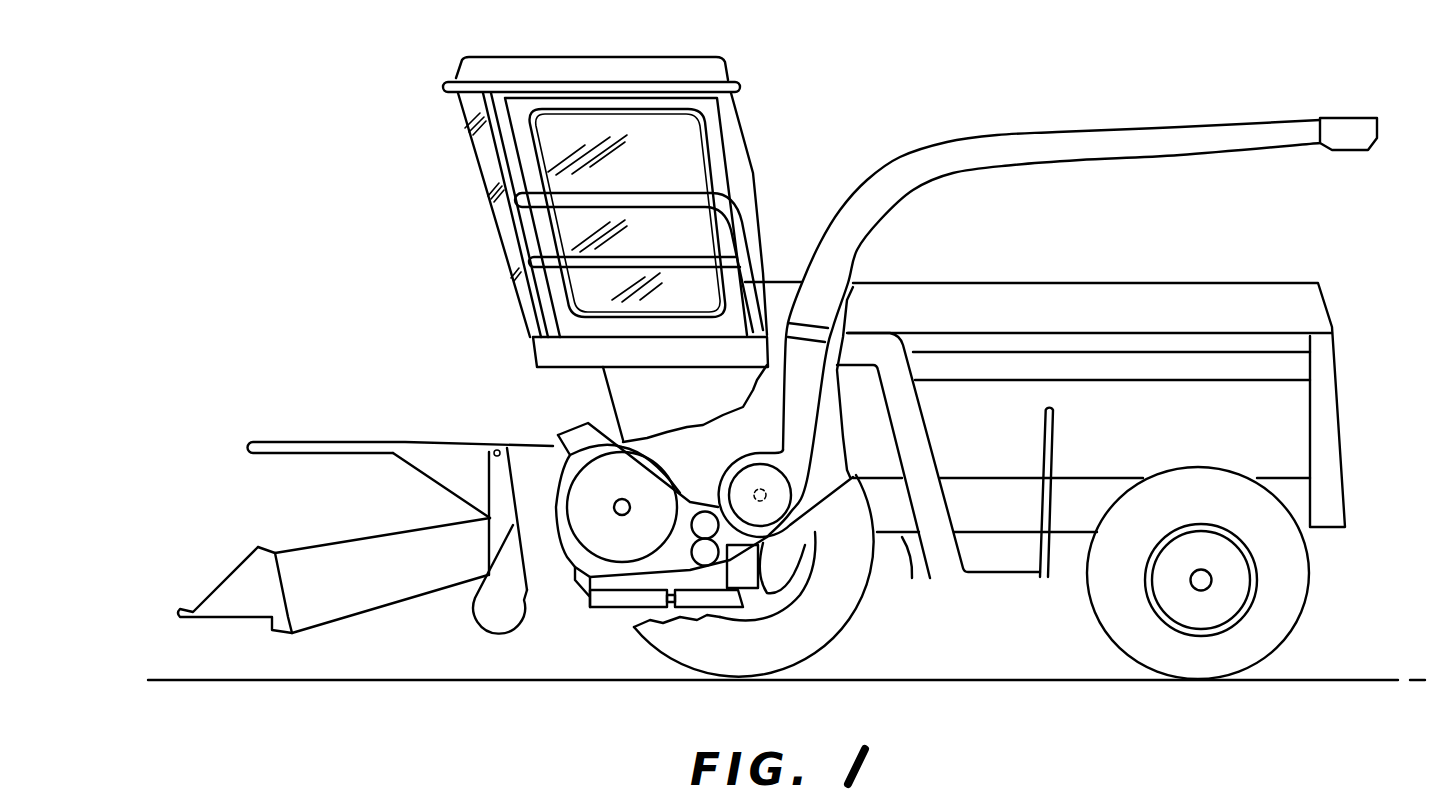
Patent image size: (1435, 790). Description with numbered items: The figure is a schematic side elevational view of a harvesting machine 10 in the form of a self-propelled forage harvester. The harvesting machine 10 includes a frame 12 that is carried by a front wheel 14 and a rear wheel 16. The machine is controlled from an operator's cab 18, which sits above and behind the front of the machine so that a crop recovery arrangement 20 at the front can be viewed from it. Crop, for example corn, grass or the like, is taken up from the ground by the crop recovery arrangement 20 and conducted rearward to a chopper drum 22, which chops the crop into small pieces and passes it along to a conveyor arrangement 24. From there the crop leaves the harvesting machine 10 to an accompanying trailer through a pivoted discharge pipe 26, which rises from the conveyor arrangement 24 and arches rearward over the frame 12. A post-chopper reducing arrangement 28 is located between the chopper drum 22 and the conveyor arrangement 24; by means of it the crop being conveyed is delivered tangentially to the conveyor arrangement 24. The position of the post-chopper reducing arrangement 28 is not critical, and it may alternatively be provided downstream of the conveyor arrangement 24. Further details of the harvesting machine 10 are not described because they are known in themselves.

The harvesting machine 10 is at (417, 360).
The frame 12 is at (902, 535).
The front wheel 14 is at (857, 627).
The rear wheel 16 is at (1300, 635).
The operator's cab 18 is at (491, 207).
The crop recovery arrangement 20 is at (401, 615).
The chopper drum 22 is at (586, 556).
The conveyor arrangement 24 is at (730, 448).
The pivoted discharge pipe 26 is at (1060, 131).
The post-chopper reducing arrangement 28 is at (705, 577).